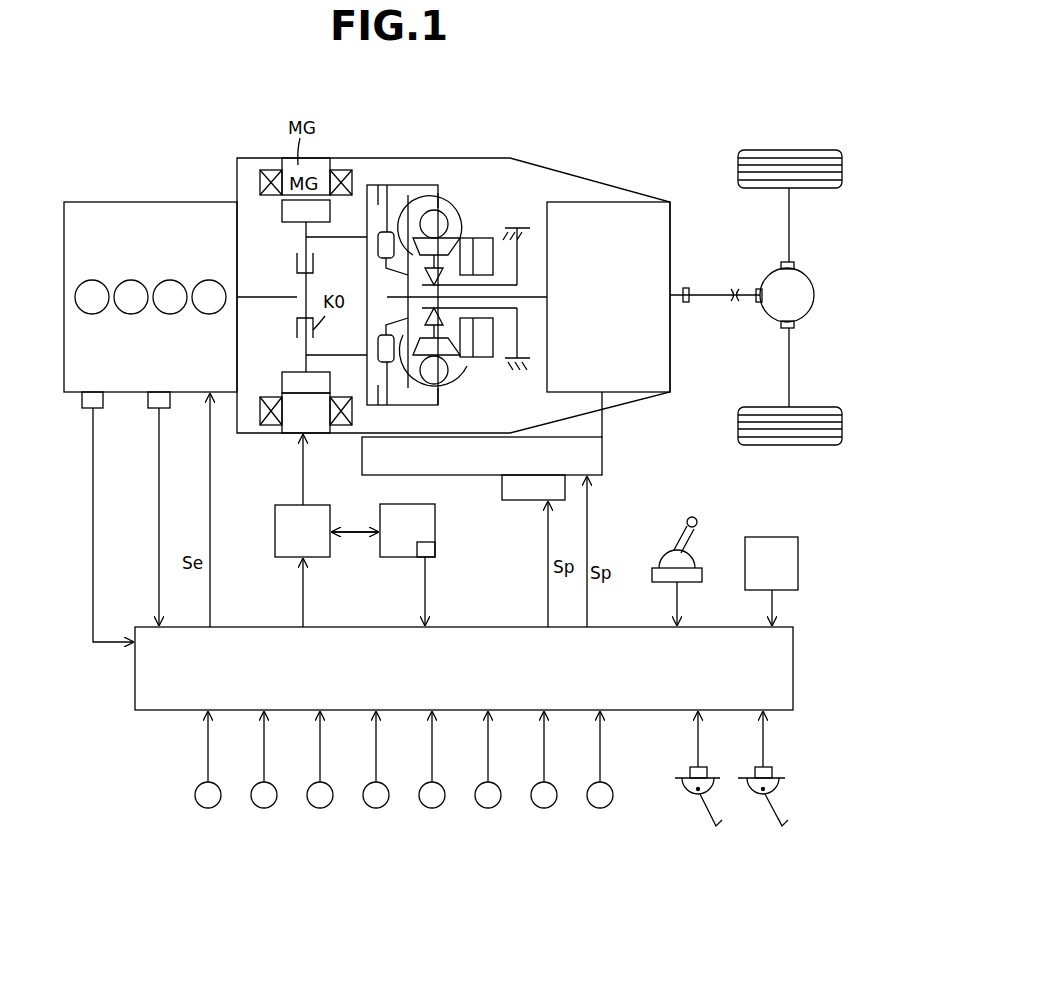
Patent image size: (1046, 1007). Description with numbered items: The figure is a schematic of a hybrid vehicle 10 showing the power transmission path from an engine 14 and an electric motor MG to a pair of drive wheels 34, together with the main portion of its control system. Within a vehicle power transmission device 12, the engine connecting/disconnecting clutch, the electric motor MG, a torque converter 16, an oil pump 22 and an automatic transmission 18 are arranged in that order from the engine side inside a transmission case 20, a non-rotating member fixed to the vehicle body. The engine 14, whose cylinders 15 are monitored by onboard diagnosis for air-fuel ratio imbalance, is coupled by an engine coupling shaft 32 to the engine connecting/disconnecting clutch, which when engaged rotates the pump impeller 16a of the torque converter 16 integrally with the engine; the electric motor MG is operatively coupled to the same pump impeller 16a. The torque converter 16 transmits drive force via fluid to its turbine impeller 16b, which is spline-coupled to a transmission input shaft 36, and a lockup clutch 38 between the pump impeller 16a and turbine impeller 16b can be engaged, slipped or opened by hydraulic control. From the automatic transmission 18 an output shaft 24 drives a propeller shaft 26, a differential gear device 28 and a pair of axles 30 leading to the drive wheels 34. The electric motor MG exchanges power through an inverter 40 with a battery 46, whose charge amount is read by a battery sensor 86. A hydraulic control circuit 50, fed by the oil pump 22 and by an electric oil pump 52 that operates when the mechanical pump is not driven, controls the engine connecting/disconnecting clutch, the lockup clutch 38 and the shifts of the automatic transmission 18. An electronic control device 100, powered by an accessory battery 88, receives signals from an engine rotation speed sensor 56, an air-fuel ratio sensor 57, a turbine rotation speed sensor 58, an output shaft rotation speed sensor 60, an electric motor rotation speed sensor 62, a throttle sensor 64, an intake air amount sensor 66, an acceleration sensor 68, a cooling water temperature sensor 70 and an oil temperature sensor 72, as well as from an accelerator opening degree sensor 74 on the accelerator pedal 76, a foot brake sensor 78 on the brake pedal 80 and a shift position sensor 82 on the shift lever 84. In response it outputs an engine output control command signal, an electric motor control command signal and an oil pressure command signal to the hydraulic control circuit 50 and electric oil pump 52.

The hybrid vehicle 10 is at (544, 84).
The vehicle power transmission device 12 is at (440, 112).
The engine 14 is at (148, 200).
The cylinders 15 is at (95, 290).
The torque converter 16 is at (457, 278).
The pump impeller 16a is at (452, 388).
The turbine impeller 16b is at (415, 378).
The automatic transmission 18 is at (630, 216).
The transmission case 20 is at (462, 158).
The oil pump 22 is at (483, 350).
The output shaft 24 is at (687, 287).
The propeller shaft 26 is at (712, 300).
The differential gear device 28 is at (808, 282).
The axles 30 is at (788, 228).
The engine coupling shaft 32 is at (270, 295).
The drive wheels 34 is at (740, 170).
The transmission input shaft 36 is at (533, 300).
The lockup clutch 38 is at (397, 190).
The inverter 40 is at (275, 533).
The battery 46 is at (380, 555).
The hydraulic control circuit 50 is at (605, 445).
The electric oil pump 52 is at (528, 492).
The engine rotation speed sensor 56 is at (148, 400).
The air-fuel ratio sensor 57 is at (82, 400).
The turbine rotation speed sensor 58 is at (208, 808).
The output shaft rotation speed sensor 60 is at (264, 808).
The electric motor rotation speed sensor 62 is at (320, 808).
The throttle sensor 64 is at (376, 808).
The intake air amount sensor 66 is at (432, 808).
The acceleration sensor 68 is at (488, 808).
The cooling water temperature sensor 70 is at (544, 808).
The oil temperature sensor 72 is at (600, 808).
The accelerator opening degree sensor 74 is at (688, 773).
The accelerator pedal 76 is at (706, 815).
The foot brake sensor 78 is at (753, 773).
The brake pedal 80 is at (772, 815).
The shift position sensor 82 is at (652, 575).
The shift lever 84 is at (688, 517).
The battery sensor 86 is at (437, 548).
The accessory battery 88 is at (775, 550).
The electronic control device 100 is at (145, 702).